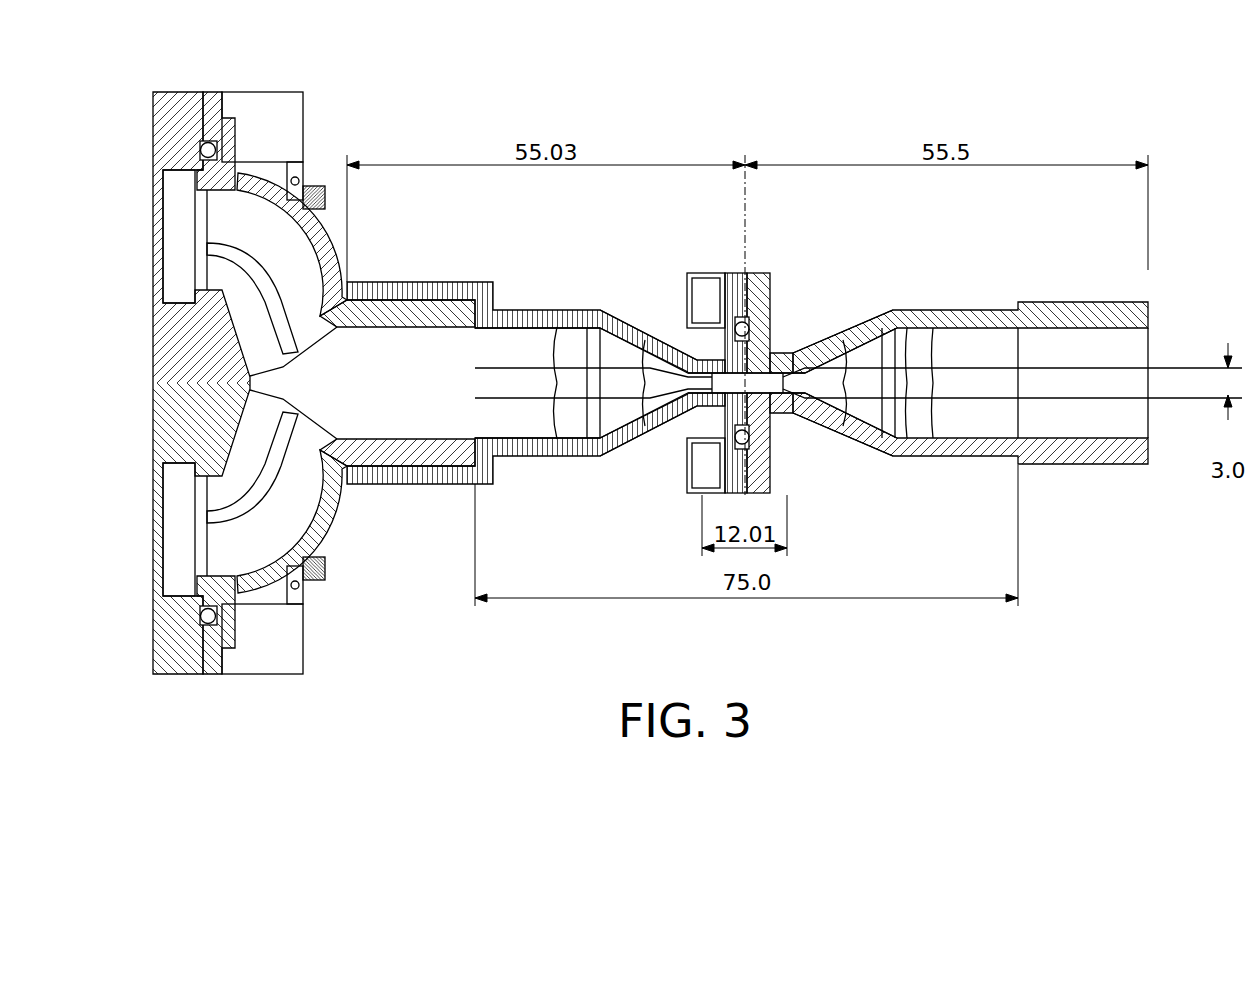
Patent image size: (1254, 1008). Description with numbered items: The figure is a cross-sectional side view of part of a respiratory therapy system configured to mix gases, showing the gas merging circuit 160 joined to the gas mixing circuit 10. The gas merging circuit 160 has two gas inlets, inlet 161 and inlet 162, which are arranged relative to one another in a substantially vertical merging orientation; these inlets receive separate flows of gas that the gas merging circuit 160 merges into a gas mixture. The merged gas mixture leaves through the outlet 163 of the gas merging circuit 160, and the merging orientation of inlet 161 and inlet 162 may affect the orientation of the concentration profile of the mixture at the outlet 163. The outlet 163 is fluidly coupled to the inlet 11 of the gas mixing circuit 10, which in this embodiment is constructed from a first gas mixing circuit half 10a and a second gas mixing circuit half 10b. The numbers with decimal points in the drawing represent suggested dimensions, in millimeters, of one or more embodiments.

The gas mixing circuit 10 is at (575, 320).
The first gas mixing circuit half 10a is at (628, 440).
The second gas mixing circuit half 10b is at (857, 438).
The inlet of gas mixing circuit 11 is at (525, 330).
The gas merging circuit 160 is at (332, 246).
The inlet 161 is at (237, 220).
The inlet 162 is at (237, 548).
The outlet 163 is at (415, 305).